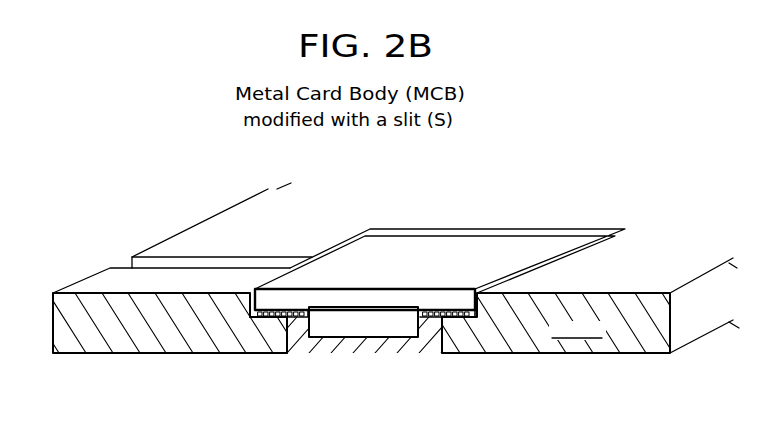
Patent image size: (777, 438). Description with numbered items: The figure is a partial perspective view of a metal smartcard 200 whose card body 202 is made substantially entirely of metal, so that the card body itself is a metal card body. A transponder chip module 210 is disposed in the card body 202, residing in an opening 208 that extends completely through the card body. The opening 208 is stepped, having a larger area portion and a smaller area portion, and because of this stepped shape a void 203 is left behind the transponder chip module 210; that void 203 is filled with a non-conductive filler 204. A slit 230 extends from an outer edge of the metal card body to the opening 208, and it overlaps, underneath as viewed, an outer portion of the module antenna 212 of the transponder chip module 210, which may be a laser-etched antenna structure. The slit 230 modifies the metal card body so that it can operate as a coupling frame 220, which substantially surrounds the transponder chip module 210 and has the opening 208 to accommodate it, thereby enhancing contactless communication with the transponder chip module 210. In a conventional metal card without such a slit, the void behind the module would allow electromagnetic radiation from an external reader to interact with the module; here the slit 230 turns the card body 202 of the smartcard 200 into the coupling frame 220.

The metal smartcard 200 is at (124, 136).
The card body 202 is at (193, 224).
The void 203 is at (282, 338).
The non-conductive filler 204 is at (337, 346).
The opening 208 is at (497, 221).
The transponder chip module 210 is at (462, 261).
The module antenna 212 is at (292, 304).
The coupling frame 220 is at (235, 206).
The slit 230 is at (123, 265).